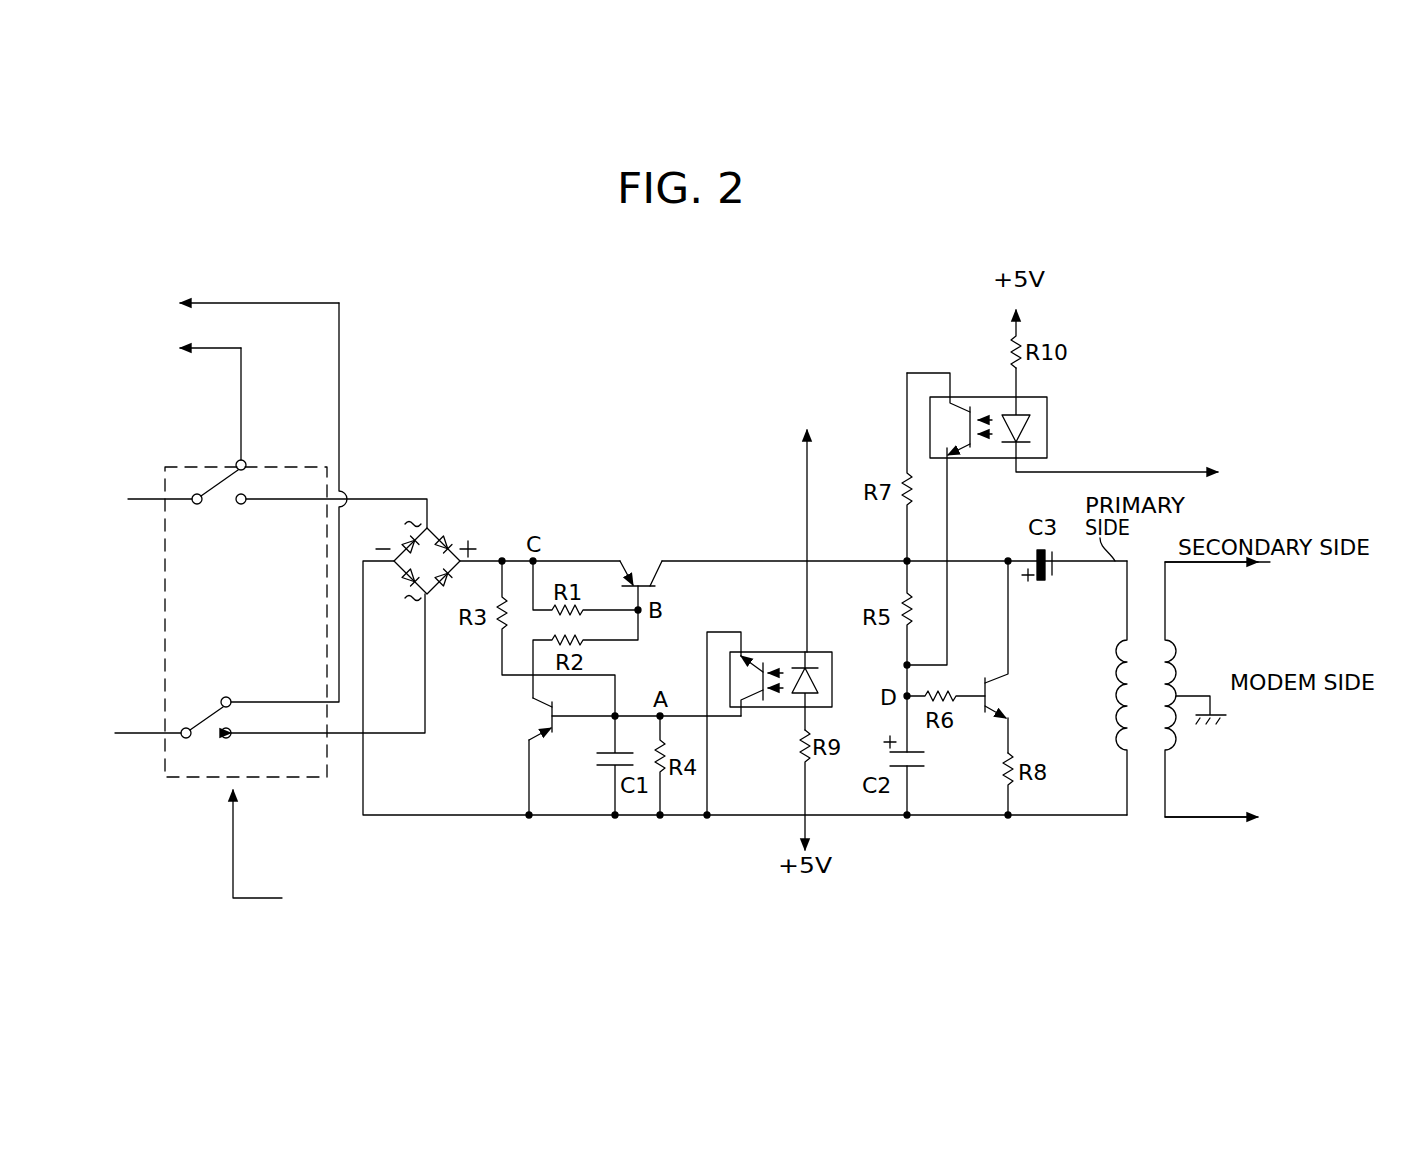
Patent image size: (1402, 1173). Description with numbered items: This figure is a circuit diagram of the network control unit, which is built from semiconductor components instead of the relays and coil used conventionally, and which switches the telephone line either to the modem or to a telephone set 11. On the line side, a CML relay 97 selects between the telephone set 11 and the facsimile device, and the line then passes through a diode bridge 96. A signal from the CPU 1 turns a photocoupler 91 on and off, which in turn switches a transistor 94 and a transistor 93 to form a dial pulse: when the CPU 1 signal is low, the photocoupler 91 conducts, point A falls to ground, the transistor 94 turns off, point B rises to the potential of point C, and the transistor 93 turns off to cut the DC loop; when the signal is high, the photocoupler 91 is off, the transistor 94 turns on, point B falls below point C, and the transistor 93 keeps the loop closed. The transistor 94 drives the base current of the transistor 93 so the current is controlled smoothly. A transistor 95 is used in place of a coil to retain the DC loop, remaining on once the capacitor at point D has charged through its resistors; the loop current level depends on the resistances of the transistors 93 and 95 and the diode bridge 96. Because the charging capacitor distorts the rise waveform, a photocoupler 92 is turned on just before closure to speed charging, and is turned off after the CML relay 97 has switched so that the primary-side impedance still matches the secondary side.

The CPU 1 is at (791, 641).
The telephone set 11 is at (182, 310).
The photocoupler 91 is at (772, 708).
The photocoupler 92 is at (1047, 412).
The transistor 93 is at (632, 578).
The transistor 94 is at (543, 737).
The transistor 95 is at (997, 714).
The diode bridge 96 is at (427, 527).
The CML relay 97 is at (285, 778).